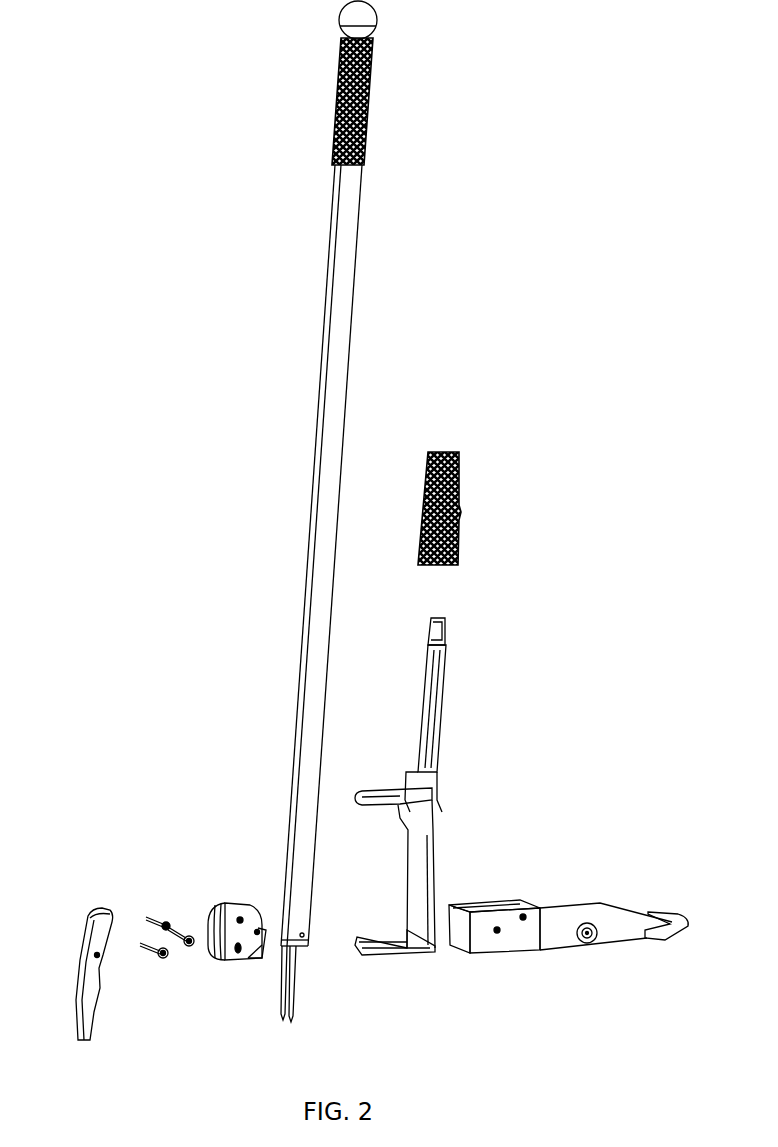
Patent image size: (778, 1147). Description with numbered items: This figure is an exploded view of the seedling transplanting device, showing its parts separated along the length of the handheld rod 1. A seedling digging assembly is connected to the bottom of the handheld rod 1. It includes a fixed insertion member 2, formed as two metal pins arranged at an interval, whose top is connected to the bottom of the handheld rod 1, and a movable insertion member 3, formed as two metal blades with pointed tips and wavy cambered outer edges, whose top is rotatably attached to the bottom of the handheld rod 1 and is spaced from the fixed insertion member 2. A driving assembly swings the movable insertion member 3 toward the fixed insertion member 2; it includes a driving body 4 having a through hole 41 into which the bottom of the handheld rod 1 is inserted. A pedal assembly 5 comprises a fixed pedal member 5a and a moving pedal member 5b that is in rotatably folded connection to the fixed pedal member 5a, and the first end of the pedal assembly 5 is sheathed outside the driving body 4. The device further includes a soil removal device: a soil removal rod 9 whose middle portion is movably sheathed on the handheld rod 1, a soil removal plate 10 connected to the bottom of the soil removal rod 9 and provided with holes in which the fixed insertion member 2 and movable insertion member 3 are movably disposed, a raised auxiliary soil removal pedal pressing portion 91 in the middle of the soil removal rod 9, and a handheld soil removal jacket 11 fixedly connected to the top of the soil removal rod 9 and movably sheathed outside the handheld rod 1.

The handheld rod 1 is at (341, 338).
The handheld soil removal jacket 11 is at (459, 500).
The fixed insertion member 2 is at (294, 1000).
The movable insertion member 3 is at (78, 1013).
The driving body 4 is at (211, 887).
The through hole 41 is at (258, 915).
The pedal assembly 5 is at (568, 882).
The fixed pedal member 5a is at (557, 906).
The moving pedal member 5b is at (600, 906).
The soil removal rod 9 is at (423, 786).
The auxiliary soil removal pedal pressing portion 91 is at (385, 797).
The soil removal plate 10 is at (375, 940).